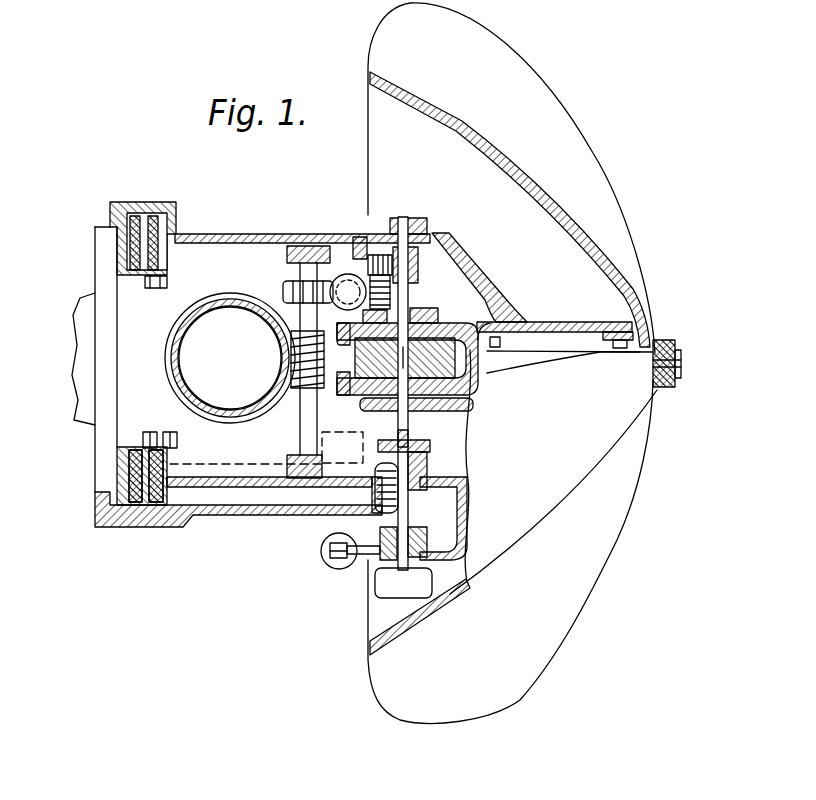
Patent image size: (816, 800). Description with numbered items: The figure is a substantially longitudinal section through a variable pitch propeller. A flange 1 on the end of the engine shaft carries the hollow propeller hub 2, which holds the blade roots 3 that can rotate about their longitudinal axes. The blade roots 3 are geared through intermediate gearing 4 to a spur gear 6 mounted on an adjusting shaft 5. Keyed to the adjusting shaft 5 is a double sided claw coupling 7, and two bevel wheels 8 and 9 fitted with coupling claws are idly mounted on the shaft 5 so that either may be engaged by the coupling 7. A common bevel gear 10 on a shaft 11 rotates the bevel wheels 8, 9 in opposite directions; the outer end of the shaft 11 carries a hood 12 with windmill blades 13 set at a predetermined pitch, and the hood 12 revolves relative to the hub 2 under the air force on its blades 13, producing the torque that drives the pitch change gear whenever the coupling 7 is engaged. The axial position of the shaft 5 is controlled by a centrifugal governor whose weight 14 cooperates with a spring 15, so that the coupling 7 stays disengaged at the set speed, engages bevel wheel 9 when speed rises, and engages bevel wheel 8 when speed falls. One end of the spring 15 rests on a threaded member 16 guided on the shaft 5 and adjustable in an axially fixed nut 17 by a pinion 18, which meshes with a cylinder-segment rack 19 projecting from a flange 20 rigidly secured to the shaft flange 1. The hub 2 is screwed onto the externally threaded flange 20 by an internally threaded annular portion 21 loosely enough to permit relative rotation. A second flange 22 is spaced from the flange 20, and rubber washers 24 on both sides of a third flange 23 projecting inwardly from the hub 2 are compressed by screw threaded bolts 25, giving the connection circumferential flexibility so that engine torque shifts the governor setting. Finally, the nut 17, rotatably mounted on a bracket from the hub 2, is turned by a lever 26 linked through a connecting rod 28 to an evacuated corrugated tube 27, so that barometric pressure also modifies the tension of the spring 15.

The flange 1 is at (104, 450).
The propeller hub 2 is at (230, 235).
The blade roots 3 is at (228, 304).
The intermediate gearing 4 is at (343, 283).
The adjusting shaft 5 is at (410, 293).
The spur gear 6 is at (413, 258).
The double sided claw coupling 7 is at (367, 393).
The bevel wheel 8 is at (450, 327).
The bevel wheel 9 is at (472, 393).
The bevel gear 10 is at (505, 370).
The shaft 11 is at (547, 352).
The hood 12 is at (598, 233).
The windmill blades 13 is at (588, 152).
The governor weight 14 is at (385, 584).
The spring 15 is at (430, 472).
The threaded member 16 is at (432, 522).
The nut 17 is at (420, 540).
The pinion 18 is at (375, 505).
The rack 19 is at (257, 514).
The flange 20 is at (110, 488).
The annular portion 21 is at (126, 504).
The second flange 22 is at (167, 454).
The third flange 23 is at (145, 503).
The rubber washers 24 is at (150, 430).
The screw threaded bolts 25 is at (168, 436).
The lever 26 is at (352, 566).
The corrugated tube 27 is at (320, 546).
The connecting rod 28 is at (322, 562).